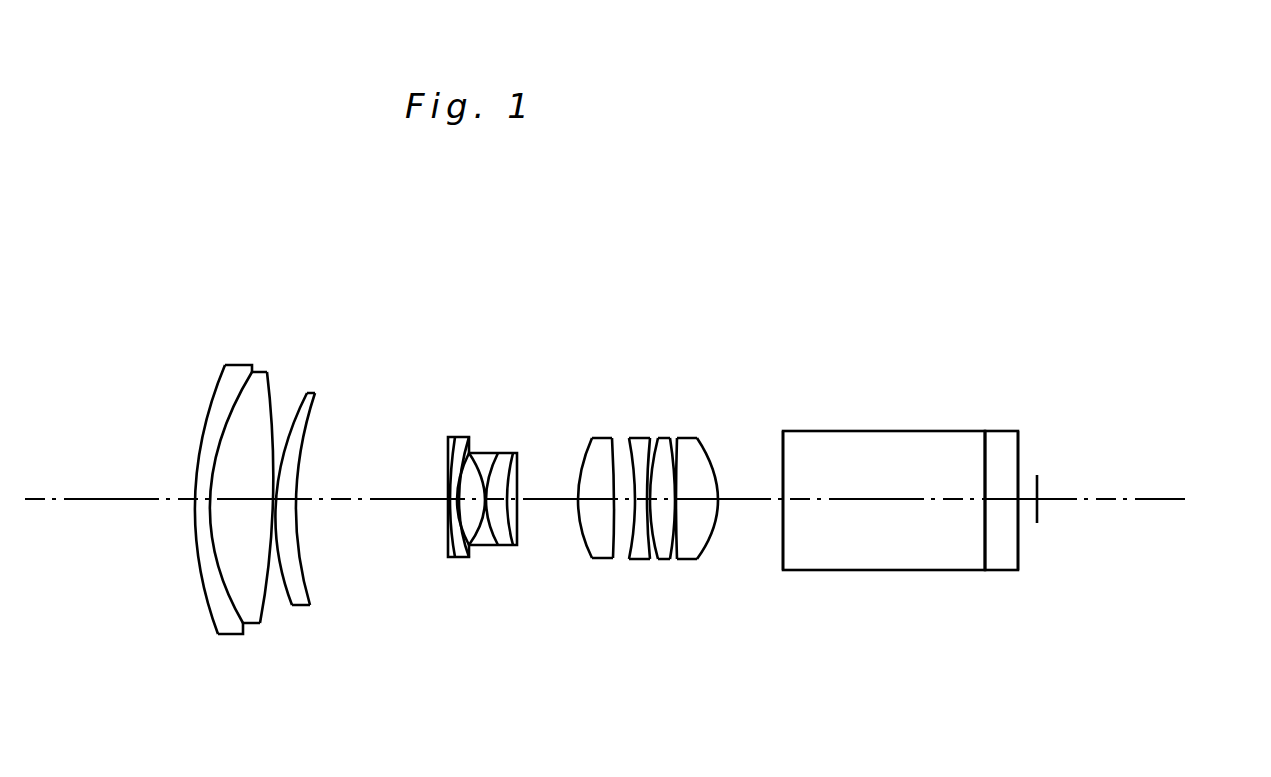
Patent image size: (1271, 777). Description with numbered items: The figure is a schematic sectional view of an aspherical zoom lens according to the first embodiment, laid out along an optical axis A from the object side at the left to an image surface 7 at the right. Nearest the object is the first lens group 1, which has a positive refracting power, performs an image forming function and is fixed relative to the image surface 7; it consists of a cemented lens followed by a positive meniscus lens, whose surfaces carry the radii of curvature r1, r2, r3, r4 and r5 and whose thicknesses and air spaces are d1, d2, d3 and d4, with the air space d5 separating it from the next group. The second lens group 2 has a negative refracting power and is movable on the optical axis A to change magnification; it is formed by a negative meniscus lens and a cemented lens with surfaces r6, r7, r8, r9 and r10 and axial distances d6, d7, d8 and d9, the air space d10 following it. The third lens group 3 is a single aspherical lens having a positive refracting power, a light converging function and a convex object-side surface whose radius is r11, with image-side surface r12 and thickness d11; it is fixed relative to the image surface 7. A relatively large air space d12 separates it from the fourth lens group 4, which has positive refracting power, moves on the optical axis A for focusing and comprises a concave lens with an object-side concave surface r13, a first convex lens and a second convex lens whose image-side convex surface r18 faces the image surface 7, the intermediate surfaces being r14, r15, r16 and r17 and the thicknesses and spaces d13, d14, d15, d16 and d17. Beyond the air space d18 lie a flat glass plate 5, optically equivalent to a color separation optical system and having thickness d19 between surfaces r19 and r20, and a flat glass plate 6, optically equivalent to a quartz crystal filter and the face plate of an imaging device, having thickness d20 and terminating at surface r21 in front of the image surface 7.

The first lens group 1 is at (213, 335).
The second lens group 2 is at (545, 367).
The third lens group 3 is at (570, 370).
The fourth lens group 4 is at (632, 345).
The flat glass plate 5 is at (805, 358).
The flat glass plate 6 is at (980, 366).
The image surface 7 is at (1040, 480).
The optical axis A is at (1155, 497).
The radius of curvature of lens surface r1 is at (195, 530).
The radius of curvature of lens surface r2 is at (213, 567).
The radius of curvature of lens surface r3 is at (265, 583).
The radius of curvature of lens surface r4 is at (292, 585).
The radius of curvature of lens surface r5 is at (310, 605).
The radius of curvature of lens surface r6 is at (448, 500).
The radius of curvature of lens surface r7 is at (460, 535).
The radius of curvature of lens surface r8 is at (462, 540).
The radius of curvature of lens surface r9 is at (480, 543).
The radius of curvature of lens surface r10 is at (508, 543).
The radius of curvature of convex surface of aspherical lens r11 is at (578, 505).
The radius of curvature of lens surface r12 is at (612, 545).
The radius of curvature of concave lens surface r13 is at (628, 560).
The radius of curvature of lens surface r14 is at (645, 560).
The radius of curvature of lens surface r15 is at (657, 563).
The radius of curvature of lens surface r16 is at (671, 560).
The radius of curvature of lens surface r17 is at (680, 560).
The radius of curvature of convex surface of second convex lens r18 is at (712, 545).
The radius of curvature of surface r19 is at (785, 502).
The radius of curvature of surface r20 is at (983, 517).
The radius of curvature of surface r21 is at (1020, 537).
The lens thickness or air space d1 is at (192, 497).
The lens thickness or air space d2 is at (240, 475).
The lens thickness or air space d3 is at (277, 475).
The lens thickness or air space d4 is at (298, 475).
The lens thickness or air space d5 is at (333, 497).
The lens thickness or air space d6 is at (448, 498).
The lens thickness or air space d7 is at (453, 440).
The lens thickness or air space d8 is at (490, 453).
The lens thickness or air space d9 is at (517, 453).
The lens thickness or air space d10 is at (552, 497).
The lens thickness or air space d11 is at (597, 438).
The air space d12 is at (622, 497).
The lens thickness or air space d13 is at (648, 497).
The lens thickness or air space d14 is at (677, 495).
The lens thickness or air space d15 is at (680, 497).
The lens thickness or air space d16 is at (703, 497).
The lens thickness or air space d17 is at (722, 490).
The lens thickness or air space d18 is at (757, 497).
The lens thickness or air space d19 is at (845, 497).
The lens thickness or air space d20 is at (1000, 497).